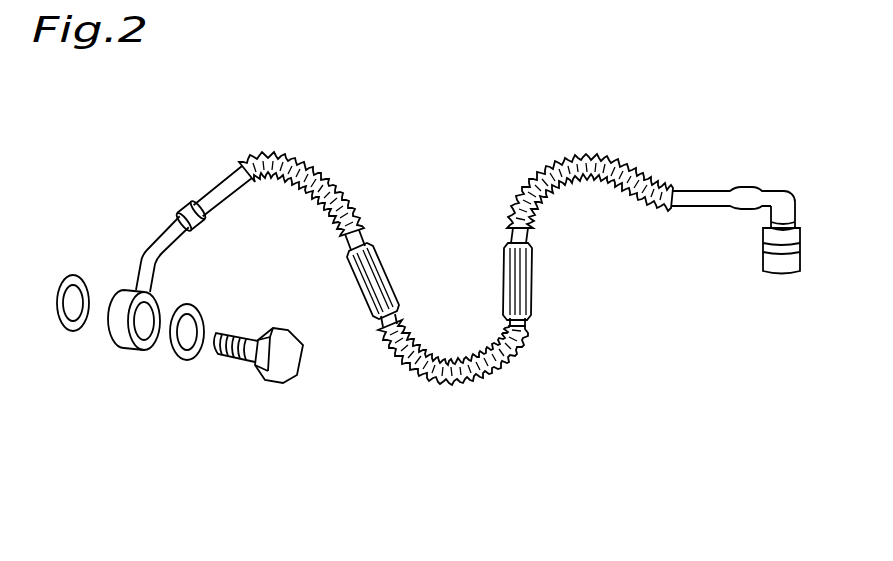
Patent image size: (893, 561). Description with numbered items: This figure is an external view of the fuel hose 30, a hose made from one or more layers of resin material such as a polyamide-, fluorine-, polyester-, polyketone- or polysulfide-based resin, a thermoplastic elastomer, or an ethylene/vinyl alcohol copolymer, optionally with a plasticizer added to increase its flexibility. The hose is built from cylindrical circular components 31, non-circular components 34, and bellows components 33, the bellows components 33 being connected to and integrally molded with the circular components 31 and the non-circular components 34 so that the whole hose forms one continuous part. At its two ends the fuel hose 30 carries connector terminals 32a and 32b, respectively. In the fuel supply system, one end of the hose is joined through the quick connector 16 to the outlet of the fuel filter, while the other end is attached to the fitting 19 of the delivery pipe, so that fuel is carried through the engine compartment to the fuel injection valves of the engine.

The quick connector 16 is at (783, 270).
The fitting 19 is at (135, 340).
The fuel hose 30 is at (452, 278).
The cylindrical circular components 31 is at (222, 187).
The connector terminal 32a is at (200, 203).
The connector terminal 32b is at (787, 197).
The bellows components 33 is at (332, 168).
The non-circular components 34 is at (375, 272).